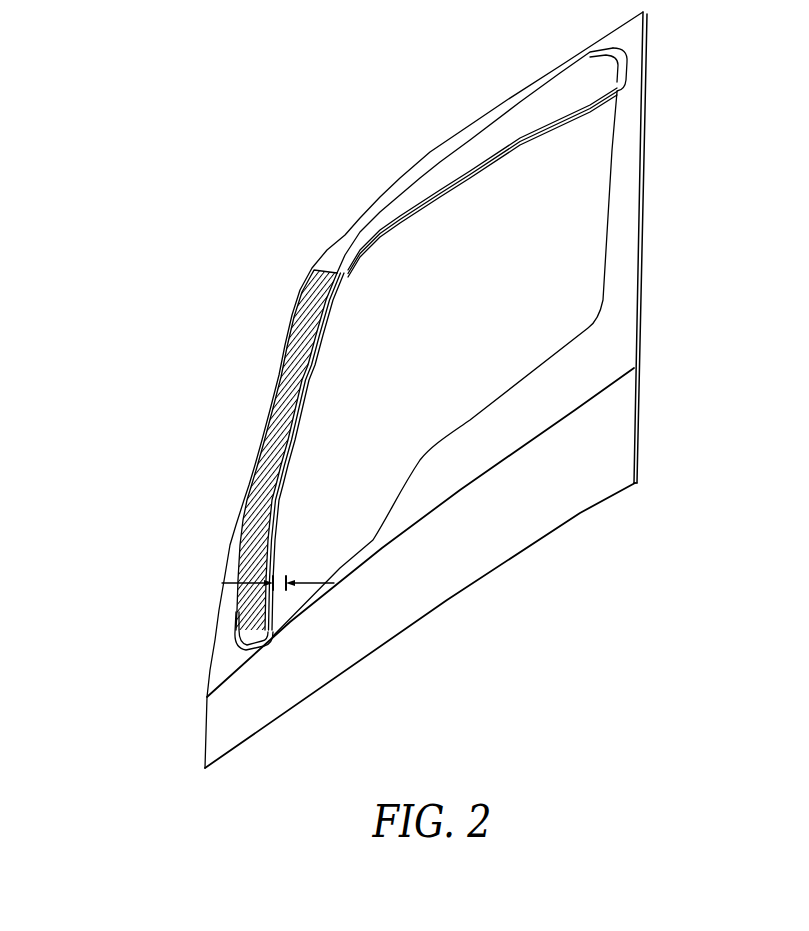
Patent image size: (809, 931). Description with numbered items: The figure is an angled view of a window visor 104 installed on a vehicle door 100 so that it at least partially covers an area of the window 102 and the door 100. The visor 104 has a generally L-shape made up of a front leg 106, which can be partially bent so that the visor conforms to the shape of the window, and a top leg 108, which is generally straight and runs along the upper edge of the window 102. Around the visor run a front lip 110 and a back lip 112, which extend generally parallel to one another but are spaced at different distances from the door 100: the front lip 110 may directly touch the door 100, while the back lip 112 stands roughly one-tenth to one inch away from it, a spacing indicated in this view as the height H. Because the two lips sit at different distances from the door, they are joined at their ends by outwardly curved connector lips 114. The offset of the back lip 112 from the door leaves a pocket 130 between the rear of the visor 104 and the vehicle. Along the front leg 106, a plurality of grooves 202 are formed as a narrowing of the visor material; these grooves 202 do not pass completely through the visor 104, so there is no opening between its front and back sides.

The vehicle door 100 is at (600, 358).
The window 102 is at (583, 290).
The window visor 104 is at (323, 246).
The front leg 106 is at (253, 477).
The top leg 108 is at (425, 195).
The front lip 110 is at (235, 631).
The back lip 112 is at (372, 256).
The connector lips 114 is at (624, 63).
The pocket 130 is at (293, 509).
The grooves 202 is at (297, 416).
The pillar width dimension H is at (312, 584).